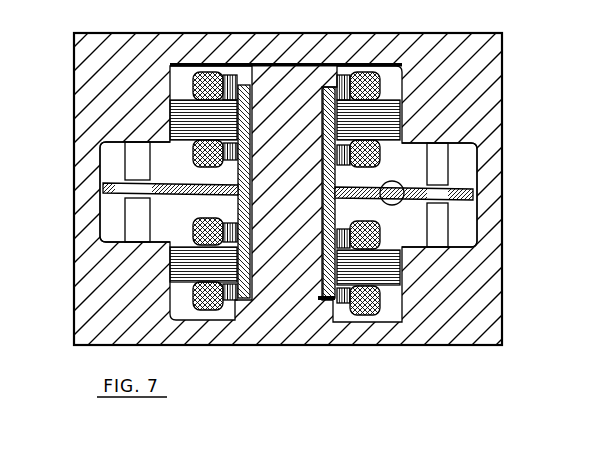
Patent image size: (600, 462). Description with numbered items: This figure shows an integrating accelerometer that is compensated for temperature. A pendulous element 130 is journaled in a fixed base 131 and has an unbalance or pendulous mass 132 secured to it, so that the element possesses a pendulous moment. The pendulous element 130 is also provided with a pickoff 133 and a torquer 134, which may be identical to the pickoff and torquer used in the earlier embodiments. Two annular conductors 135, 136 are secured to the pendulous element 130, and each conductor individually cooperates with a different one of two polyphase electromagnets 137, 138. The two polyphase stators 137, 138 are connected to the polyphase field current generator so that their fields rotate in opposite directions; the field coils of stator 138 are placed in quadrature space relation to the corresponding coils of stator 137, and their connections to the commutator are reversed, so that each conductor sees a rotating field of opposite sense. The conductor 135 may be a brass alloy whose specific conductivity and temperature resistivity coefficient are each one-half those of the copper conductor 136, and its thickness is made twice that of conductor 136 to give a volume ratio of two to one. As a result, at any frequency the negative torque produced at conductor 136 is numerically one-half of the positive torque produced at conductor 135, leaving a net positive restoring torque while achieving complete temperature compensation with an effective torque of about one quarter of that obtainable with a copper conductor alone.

The pendulous element 130 is at (238, 207).
The fixed base 131 is at (270, 319).
The pendulous mass 132 is at (388, 205).
The pickoff 133 is at (460, 172).
The torquer 134 is at (113, 198).
The annular conductor 135 is at (240, 128).
The annular conductor 136 is at (241, 243).
The polyphase electromagnet 137 is at (399, 109).
The polyphase electromagnet 138 is at (391, 278).